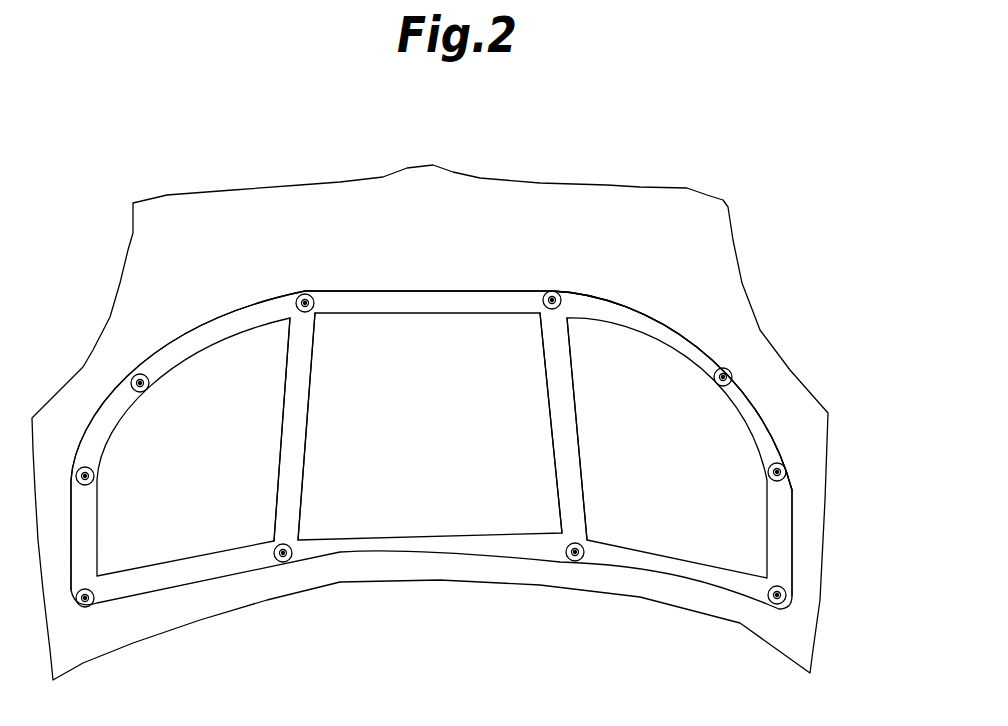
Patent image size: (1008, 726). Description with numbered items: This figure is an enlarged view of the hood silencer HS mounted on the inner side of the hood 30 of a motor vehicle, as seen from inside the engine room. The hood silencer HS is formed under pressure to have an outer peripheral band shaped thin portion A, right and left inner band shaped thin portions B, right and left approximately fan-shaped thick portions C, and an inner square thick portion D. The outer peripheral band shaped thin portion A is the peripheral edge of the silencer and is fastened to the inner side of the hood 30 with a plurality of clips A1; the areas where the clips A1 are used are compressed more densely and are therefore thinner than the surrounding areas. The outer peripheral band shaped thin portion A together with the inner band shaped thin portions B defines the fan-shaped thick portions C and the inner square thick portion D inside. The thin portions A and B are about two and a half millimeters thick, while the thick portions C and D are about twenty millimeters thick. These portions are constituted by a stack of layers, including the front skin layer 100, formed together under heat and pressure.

The hood 30 is at (686, 190).
The front skin layer 100 is at (740, 527).
The outer peripheral band shaped thin portion A is at (477, 289).
The clips A1 is at (553, 290).
The hood silencer HS is at (714, 351).
The right and left inner band shaped thin portion B is at (302, 427).
The right and left approximately fan-shaped thick portions C is at (227, 521).
The inner square thick portion D is at (457, 510).